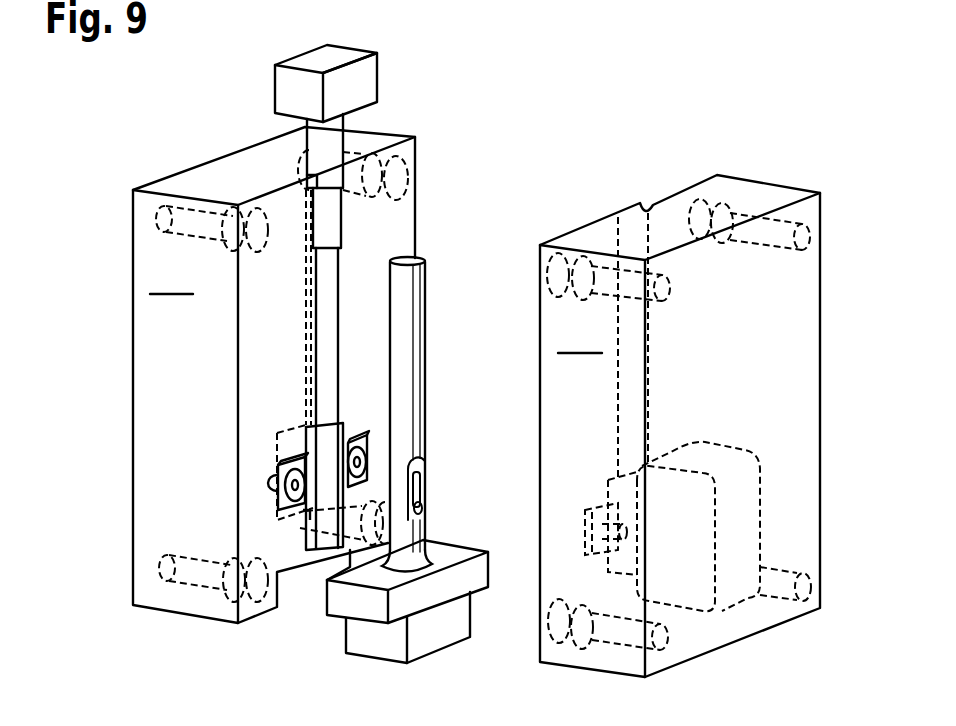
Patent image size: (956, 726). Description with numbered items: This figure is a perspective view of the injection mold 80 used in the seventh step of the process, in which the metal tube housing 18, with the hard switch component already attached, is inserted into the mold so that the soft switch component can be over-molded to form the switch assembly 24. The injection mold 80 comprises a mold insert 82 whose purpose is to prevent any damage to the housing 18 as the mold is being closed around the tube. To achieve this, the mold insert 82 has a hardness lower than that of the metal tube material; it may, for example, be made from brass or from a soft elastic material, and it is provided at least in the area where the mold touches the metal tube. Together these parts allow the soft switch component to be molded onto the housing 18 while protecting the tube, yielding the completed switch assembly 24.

The injection mold 80 is at (480, 212).
The metal tube housing 18 is at (403, 383).
The switch assembly 24 is at (430, 480).
The mold insert 82 is at (327, 503).